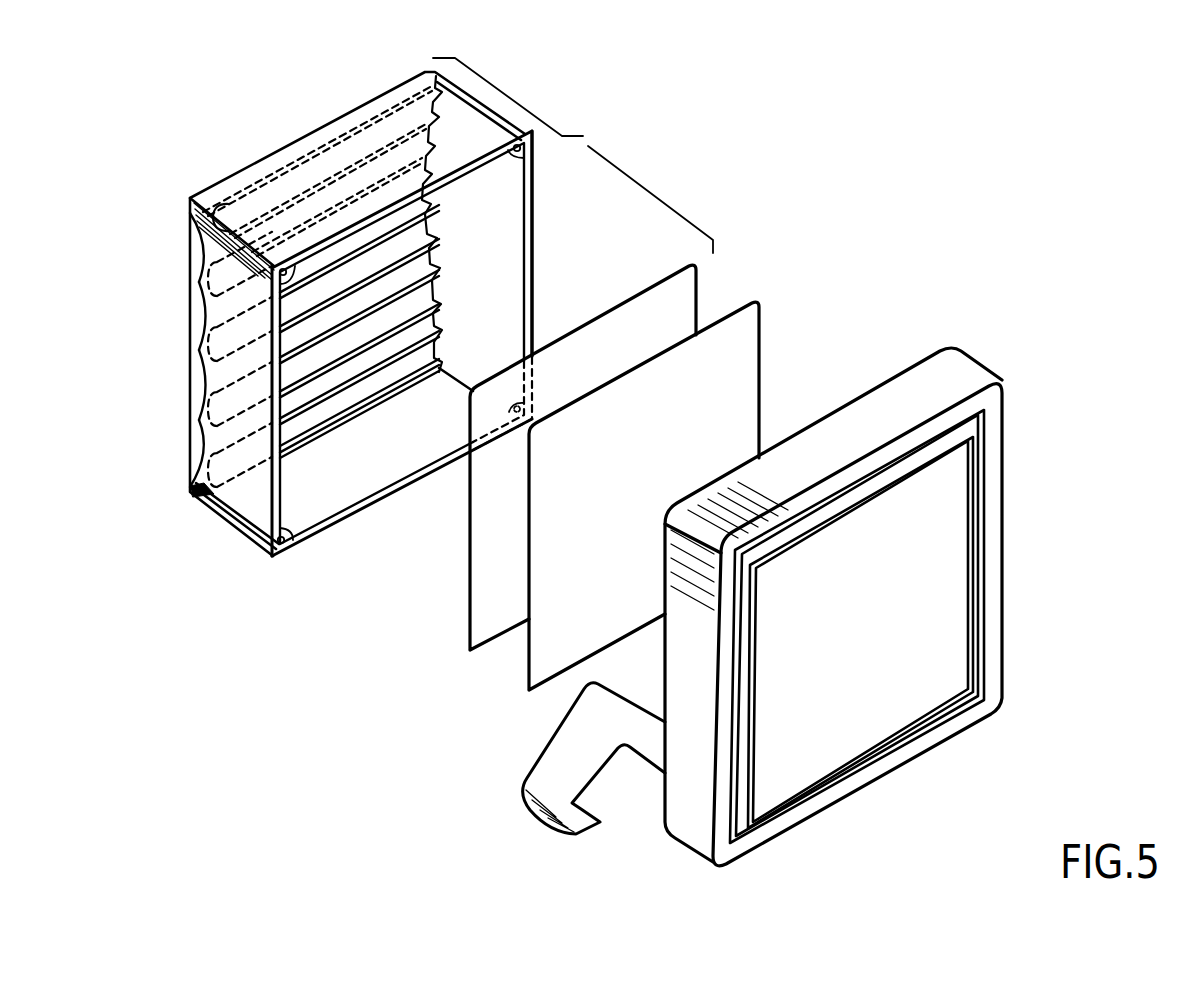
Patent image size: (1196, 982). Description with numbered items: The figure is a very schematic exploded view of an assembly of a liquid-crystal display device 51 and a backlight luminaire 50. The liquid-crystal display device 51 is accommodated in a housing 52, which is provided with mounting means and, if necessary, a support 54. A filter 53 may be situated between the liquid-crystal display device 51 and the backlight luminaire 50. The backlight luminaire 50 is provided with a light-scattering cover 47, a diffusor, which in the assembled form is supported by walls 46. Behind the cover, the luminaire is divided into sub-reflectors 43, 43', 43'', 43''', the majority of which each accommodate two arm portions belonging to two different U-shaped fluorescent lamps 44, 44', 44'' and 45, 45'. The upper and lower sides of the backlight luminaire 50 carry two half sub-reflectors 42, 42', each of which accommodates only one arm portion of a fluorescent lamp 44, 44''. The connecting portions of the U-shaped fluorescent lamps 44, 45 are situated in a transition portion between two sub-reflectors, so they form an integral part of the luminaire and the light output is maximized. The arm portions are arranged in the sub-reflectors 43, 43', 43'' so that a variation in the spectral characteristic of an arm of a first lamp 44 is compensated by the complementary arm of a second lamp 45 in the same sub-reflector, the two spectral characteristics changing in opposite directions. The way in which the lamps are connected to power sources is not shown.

The half sub-reflector 42 is at (197, 377).
The half sub-reflector 42' is at (321, 176).
The sub-reflector 43 is at (159, 453).
The sub-reflector 43' is at (160, 385).
The sub-reflector 43'' is at (160, 316).
The sub-reflector 43''' is at (160, 247).
The U-shaped fluorescent lamp 44 is at (333, 447).
The U-shaped fluorescent lamp 44' is at (277, 301).
The U-shaped fluorescent lamp 44'' is at (322, 224).
The U-shaped fluorescent lamp 45 is at (193, 398).
The U-shaped fluorescent lamp 45' is at (193, 264).
The walls 46 is at (503, 240).
The light-scattering cover 47 is at (690, 290).
The backlight luminaire 50 is at (586, 146).
The liquid-crystal display device 51 is at (900, 707).
The housing 52 is at (915, 386).
The filter 53 is at (747, 341).
The support 54 is at (560, 760).